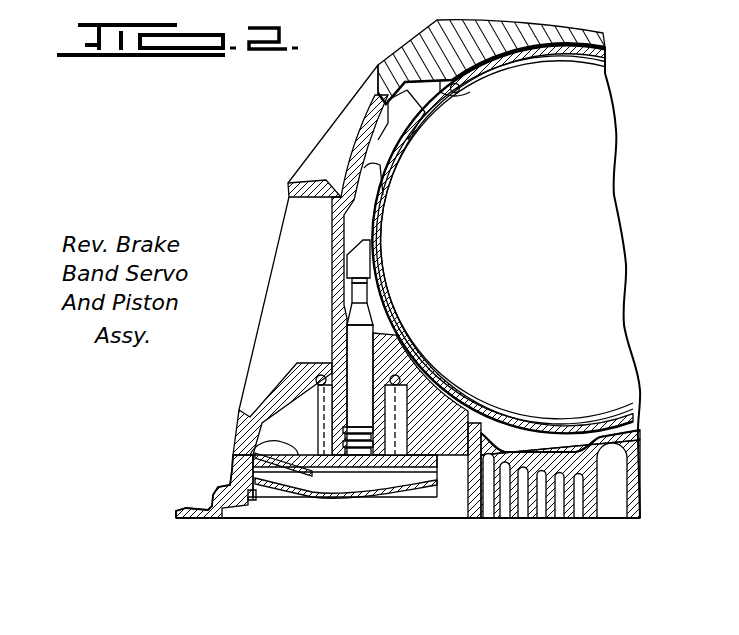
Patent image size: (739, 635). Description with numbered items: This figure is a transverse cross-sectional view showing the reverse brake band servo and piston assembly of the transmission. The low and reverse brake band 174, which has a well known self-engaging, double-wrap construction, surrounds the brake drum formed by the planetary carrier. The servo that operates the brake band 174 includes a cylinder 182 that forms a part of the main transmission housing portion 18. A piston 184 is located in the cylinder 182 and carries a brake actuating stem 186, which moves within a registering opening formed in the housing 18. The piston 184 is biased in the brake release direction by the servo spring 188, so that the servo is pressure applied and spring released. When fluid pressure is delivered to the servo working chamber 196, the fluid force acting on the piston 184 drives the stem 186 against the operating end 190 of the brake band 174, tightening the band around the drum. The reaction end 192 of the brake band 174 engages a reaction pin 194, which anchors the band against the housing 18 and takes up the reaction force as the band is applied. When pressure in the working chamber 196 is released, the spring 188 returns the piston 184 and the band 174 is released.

The main transmission portion 18 is at (398, 78).
The low and reverse brake band 174 is at (388, 141).
The cylinder 182 is at (275, 400).
The piston 184 is at (292, 448).
The brake actuating stem 186 is at (365, 365).
The servo spring 188 is at (320, 385).
The operating end of the brake band 190 is at (362, 258).
The reaction end of the brake band 192 is at (420, 108).
The reaction pin 194 is at (445, 75).
The servo working chamber 196 is at (395, 512).